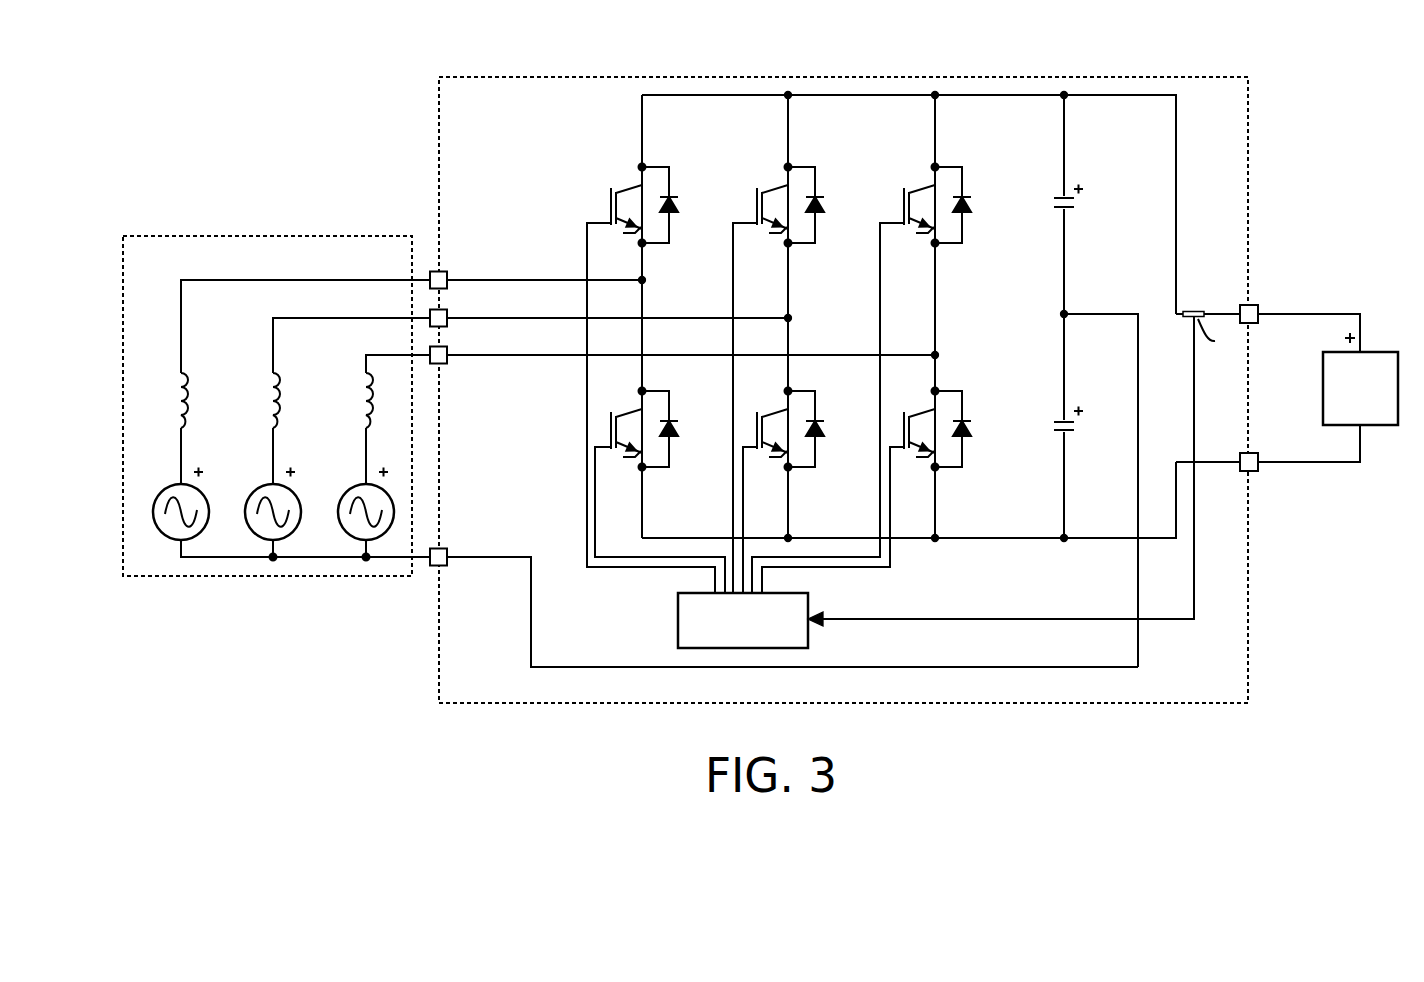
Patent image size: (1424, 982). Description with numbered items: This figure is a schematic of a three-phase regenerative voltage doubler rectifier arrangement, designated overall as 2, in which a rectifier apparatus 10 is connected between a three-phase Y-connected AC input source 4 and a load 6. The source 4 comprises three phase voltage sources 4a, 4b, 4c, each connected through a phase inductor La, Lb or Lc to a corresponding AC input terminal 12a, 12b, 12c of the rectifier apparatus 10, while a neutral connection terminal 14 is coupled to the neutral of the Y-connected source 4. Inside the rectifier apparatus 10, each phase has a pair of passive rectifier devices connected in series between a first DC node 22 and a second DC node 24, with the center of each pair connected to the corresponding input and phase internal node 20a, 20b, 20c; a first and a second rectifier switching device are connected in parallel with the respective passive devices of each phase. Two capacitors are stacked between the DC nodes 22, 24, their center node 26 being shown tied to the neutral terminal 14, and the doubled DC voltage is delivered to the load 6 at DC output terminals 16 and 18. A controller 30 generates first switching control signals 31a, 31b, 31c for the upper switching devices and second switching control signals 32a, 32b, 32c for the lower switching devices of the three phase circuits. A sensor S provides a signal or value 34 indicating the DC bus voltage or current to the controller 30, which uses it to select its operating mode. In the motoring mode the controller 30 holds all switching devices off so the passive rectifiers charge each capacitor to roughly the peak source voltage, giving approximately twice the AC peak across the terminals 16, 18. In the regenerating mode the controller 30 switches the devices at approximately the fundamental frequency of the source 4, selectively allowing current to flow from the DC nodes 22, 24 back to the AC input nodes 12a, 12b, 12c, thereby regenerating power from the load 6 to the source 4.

The power conversion system 2 is at (283, 55).
The AC input source 4 is at (264, 232).
The phase voltage source 4a is at (171, 486).
The phase voltage source 4b is at (263, 486).
The phase voltage source 4c is at (356, 486).
The load 6 is at (1378, 352).
The rectifier apparatus 10 is at (439, 133).
The AC input terminal 12a is at (447, 273).
The AC input terminal 12b is at (447, 311).
The AC input terminal 12c is at (447, 348).
The neutral connection terminal 14 is at (447, 548).
The DC output terminal 16 is at (1241, 305).
The DC output terminal 18 is at (1241, 453).
The phase internal node 20a is at (641, 273).
The phase internal node 20b is at (787, 311).
The phase internal node 20c is at (934, 348).
The first DC node 22 is at (643, 117).
The second DC node 24 is at (643, 528).
The capacitor midpoint node 26 is at (1063, 302).
The controller 30 is at (677, 623).
The switching control signal 31a is at (587, 245).
The switching control signal 31b is at (733, 245).
The switching control signal 31c is at (880, 245).
The switching control signal 32a is at (594, 484).
The switching control signal 32b is at (741, 484).
The switching control signal 32c is at (889, 484).
The sensor signal 34 is at (1193, 355).